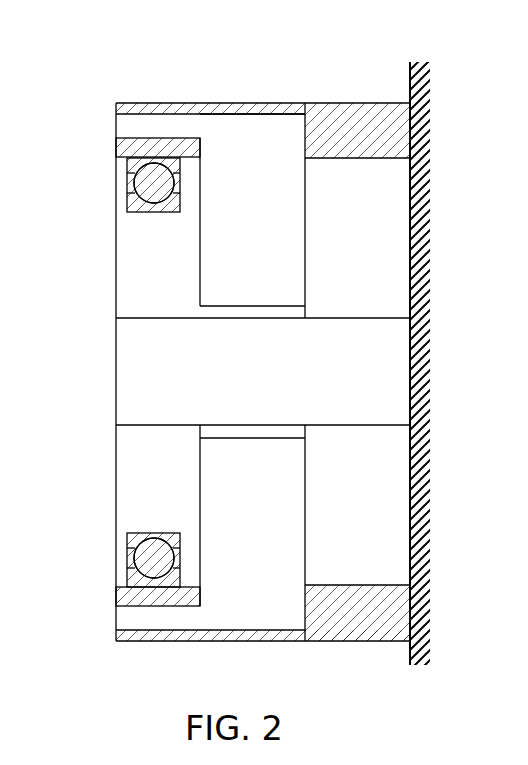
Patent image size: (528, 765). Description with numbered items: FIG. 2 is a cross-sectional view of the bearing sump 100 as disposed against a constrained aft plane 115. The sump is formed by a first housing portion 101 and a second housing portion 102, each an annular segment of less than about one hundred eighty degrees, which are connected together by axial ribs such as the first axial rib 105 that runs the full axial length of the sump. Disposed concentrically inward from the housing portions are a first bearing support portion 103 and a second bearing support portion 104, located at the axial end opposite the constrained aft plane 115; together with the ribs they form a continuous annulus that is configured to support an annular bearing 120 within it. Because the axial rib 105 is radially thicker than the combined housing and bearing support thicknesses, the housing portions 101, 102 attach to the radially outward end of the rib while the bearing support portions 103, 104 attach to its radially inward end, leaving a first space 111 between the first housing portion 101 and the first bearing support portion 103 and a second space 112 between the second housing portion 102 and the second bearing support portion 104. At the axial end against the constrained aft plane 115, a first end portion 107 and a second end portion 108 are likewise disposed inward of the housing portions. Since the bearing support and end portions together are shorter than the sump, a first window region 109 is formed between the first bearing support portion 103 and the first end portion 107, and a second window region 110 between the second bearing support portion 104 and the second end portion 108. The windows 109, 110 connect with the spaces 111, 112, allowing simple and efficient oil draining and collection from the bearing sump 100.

The bearing sump 100 is at (364, 78).
The first housing portion 101 is at (161, 103).
The second housing portion 102 is at (148, 641).
The first bearing support portion 103 is at (118, 150).
The second bearing support portion 104 is at (118, 597).
The first axial rib 105 is at (126, 366).
The first end portion 107 is at (348, 148).
The second end portion 108 is at (350, 592).
The first window region 109 is at (270, 160).
The second window region 110 is at (270, 594).
The first space 111 is at (110, 121).
The second space 112 is at (110, 618).
The constrained aft plane 115 is at (432, 104).
The annular bearing 120 is at (132, 185).